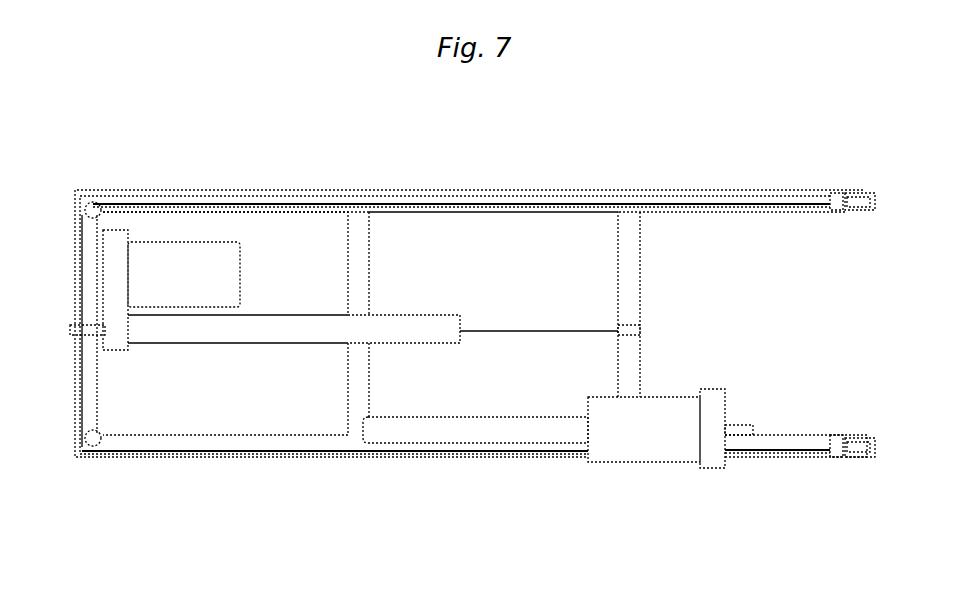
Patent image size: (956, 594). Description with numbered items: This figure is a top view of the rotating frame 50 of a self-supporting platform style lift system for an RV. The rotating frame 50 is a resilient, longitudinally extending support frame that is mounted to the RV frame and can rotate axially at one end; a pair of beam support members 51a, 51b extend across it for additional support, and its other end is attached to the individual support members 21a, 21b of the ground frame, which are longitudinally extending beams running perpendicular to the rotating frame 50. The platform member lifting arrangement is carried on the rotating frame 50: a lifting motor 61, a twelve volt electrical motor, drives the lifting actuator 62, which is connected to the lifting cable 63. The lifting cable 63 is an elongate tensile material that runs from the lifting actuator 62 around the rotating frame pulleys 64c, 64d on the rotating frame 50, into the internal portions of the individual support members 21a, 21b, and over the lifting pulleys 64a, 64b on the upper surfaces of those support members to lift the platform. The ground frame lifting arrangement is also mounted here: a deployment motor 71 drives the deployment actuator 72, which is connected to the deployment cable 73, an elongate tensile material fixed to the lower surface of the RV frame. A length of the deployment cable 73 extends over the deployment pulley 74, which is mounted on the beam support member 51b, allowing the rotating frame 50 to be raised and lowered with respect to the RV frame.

The rotating frame 50 is at (128, 458).
The lifting cable 63 is at (396, 203).
The rotating frame pulley 64d is at (92, 203).
The rotating frame pulley 64c is at (88, 444).
The lifting pulley 64b is at (862, 210).
The lifting pulley 64a is at (866, 440).
The deployment motor 71 is at (175, 265).
The deployment actuator 72 is at (212, 332).
The deployment cable 73 is at (503, 330).
The deployment pulley 74 is at (644, 330).
The beam support member 51a is at (357, 375).
The beam support member 51b is at (640, 258).
The lifting actuator 62 is at (422, 428).
The lifting motor 61 is at (613, 443).
The individual support member 21a is at (840, 458).
The individual support member 21b is at (838, 190).